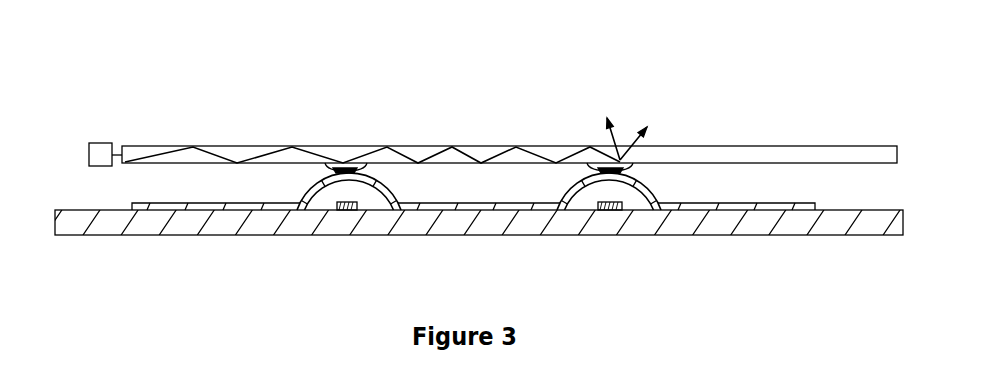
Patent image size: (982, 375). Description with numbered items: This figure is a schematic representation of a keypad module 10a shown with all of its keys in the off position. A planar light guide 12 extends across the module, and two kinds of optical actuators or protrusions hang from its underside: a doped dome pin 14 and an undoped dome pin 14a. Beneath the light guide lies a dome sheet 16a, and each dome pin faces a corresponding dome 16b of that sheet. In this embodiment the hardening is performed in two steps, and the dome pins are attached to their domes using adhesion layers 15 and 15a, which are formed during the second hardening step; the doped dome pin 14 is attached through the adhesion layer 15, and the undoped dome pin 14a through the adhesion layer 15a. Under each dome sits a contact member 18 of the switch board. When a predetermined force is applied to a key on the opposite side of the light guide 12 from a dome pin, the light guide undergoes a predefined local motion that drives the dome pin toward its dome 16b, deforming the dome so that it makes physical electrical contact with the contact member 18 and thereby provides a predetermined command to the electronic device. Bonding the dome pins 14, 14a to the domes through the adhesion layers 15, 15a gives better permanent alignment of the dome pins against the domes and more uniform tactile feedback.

The keypad module 10a is at (415, 90).
The planar light guide 12 is at (770, 145).
The doped dome pin 14 is at (622, 158).
The undoped dome pin 14a is at (347, 167).
The adhesion layer 15 is at (597, 164).
The adhesion layer 15a is at (350, 165).
The dome sheet 16a is at (772, 200).
The dome 16b is at (648, 190).
The contact member 18 is at (337, 202).